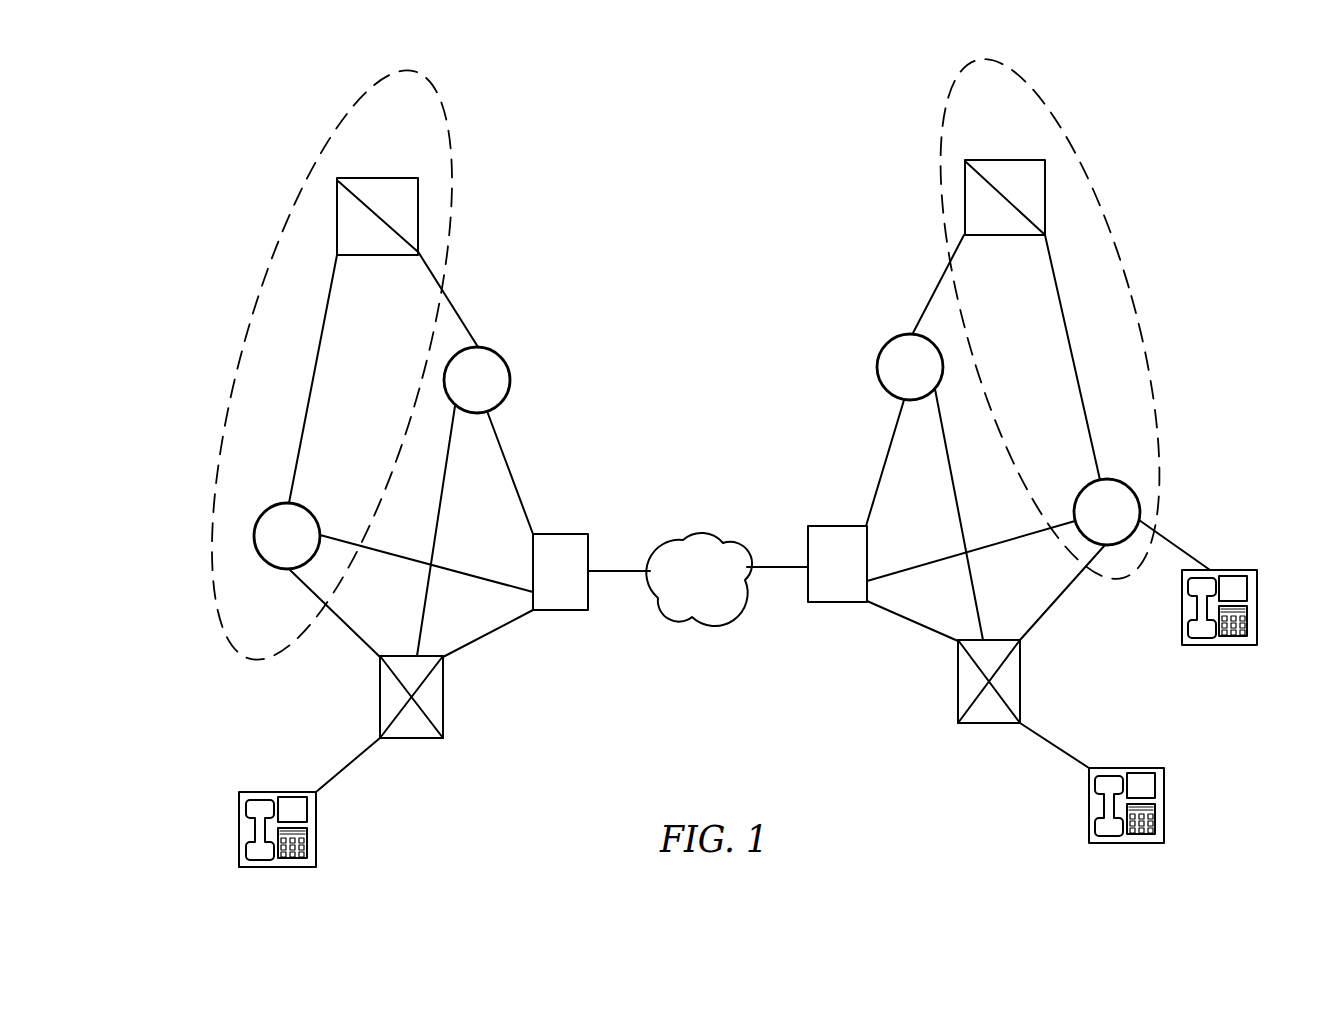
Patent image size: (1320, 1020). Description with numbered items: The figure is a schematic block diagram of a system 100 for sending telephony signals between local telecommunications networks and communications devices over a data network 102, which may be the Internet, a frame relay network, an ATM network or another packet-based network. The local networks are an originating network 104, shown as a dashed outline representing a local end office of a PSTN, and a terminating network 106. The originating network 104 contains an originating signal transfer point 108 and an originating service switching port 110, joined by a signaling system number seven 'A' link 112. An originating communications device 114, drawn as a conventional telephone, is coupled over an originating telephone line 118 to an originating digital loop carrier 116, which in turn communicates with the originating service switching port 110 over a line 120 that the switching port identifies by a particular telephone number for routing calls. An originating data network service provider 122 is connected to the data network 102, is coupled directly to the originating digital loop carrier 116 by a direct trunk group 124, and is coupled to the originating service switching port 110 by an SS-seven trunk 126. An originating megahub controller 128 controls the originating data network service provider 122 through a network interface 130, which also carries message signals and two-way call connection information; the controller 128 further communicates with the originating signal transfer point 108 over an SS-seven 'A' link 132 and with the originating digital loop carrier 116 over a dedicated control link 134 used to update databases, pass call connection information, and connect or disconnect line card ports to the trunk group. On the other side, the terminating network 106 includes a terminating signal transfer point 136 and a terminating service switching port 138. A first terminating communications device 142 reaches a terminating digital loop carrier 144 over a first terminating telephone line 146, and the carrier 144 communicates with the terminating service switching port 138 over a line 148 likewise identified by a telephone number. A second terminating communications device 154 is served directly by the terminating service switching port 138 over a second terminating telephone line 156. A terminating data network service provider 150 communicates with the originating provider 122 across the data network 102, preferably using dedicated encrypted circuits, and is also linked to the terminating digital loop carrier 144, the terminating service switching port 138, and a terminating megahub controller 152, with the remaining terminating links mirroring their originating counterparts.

The system 100 is at (762, 283).
The data network 102 is at (716, 589).
The originating network 104 is at (331, 365).
The terminating network 106 is at (1049, 319).
The originating signal transfer point 108 is at (385, 196).
The originating service switching port 110 is at (305, 548).
The SS7 'A' link 112 is at (341, 379).
The originating communications device 114 is at (264, 810).
The originating digital loop carrier 116 is at (448, 697).
The originating telephone line 118 is at (362, 765).
The line 120 is at (333, 628).
The originating data network service provider 122 is at (578, 583).
The direct trunk group 124 is at (500, 638).
The SS7 trunk 126 is at (426, 563).
The originating megahub controller 128 is at (495, 392).
The network interface 130 is at (529, 472).
The SS7 'A' link 132 is at (472, 298).
The dedicated control link 134 is at (460, 531).
The terminating signal transfer point 136 is at (1005, 180).
The terminating service switching port 138 is at (1125, 524).
The first terminating communications device 142 is at (1136, 785).
The terminating digital loop carrier 144 is at (956, 681).
The first terminating telephone line 146 is at (1040, 752).
The line 148 is at (1069, 596).
The terminating data network service provider 150 is at (856, 568).
The terminating megahub controller 152 is at (928, 379).
The second terminating communications device 154 is at (1227, 629).
The second terminating telephone line 156 is at (1191, 543).